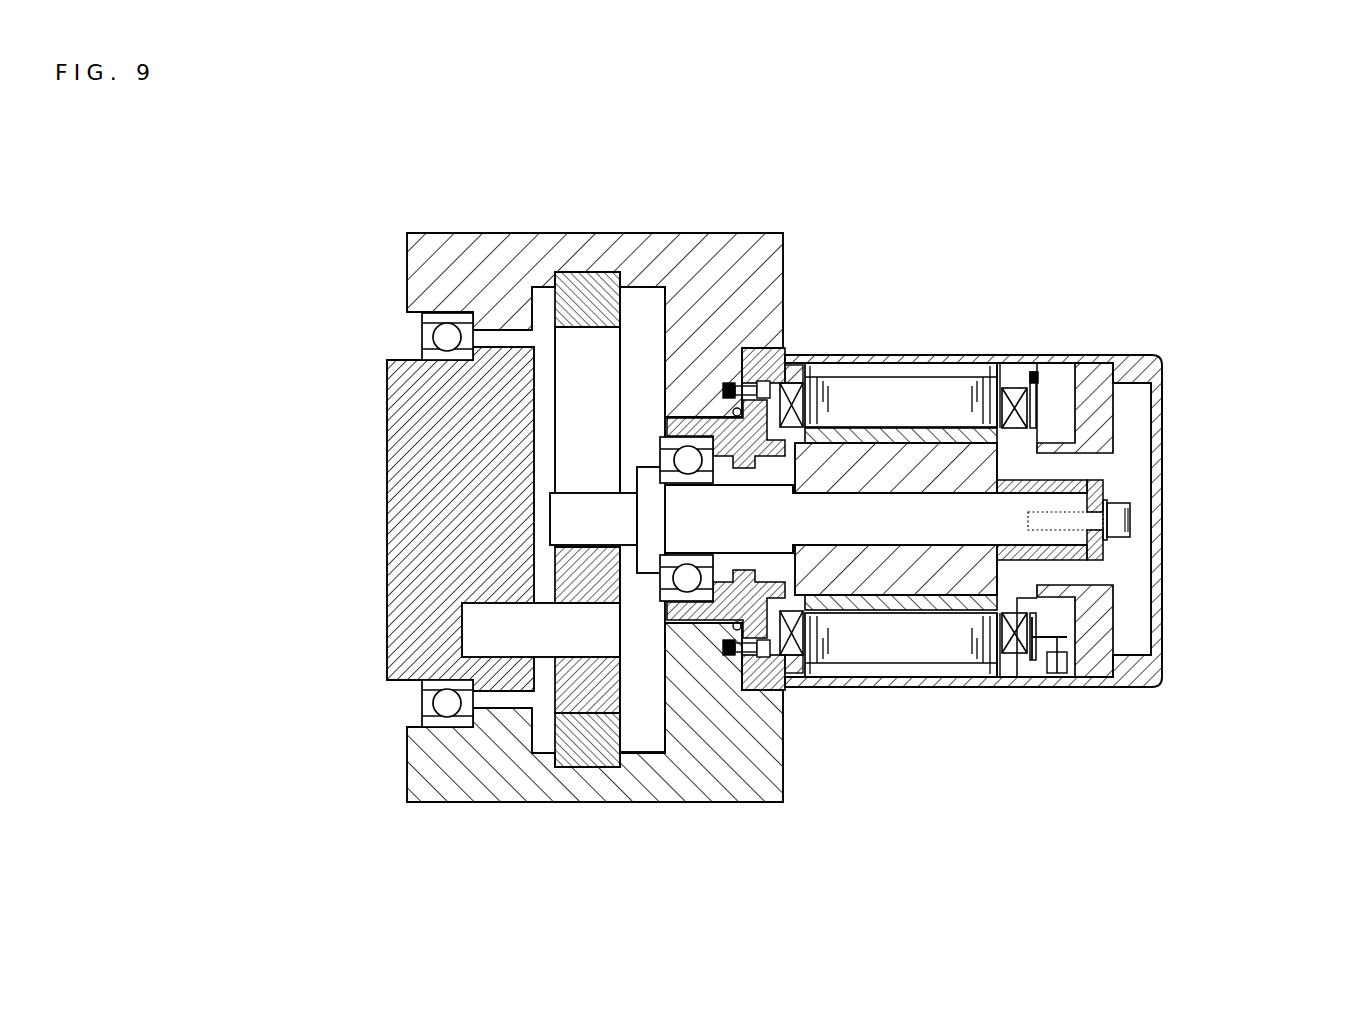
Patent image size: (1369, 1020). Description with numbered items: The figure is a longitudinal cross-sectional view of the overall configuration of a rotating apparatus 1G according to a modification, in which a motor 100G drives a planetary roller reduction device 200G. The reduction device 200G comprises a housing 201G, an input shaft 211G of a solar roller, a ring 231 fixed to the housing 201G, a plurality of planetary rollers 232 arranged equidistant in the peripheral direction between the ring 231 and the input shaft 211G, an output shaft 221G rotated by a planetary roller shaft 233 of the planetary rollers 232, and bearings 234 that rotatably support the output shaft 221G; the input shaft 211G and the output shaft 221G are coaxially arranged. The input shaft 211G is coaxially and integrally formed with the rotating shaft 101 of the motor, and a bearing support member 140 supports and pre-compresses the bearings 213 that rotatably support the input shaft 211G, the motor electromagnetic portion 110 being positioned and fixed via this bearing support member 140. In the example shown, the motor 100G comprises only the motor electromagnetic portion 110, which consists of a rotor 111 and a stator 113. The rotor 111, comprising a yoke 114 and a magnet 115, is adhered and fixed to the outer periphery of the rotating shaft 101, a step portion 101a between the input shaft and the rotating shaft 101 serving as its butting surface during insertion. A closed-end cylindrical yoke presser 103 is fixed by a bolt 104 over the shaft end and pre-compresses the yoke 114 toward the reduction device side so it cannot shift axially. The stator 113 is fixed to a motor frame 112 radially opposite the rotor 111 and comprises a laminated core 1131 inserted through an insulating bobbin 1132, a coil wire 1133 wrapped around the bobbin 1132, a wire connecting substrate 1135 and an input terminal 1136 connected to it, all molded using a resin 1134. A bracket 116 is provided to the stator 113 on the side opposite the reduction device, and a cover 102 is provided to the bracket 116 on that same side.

The rotating apparatus 1G is at (1268, 90).
The motor 100G is at (1240, 342).
The reduction device 200G is at (380, 190).
The housing 201G is at (633, 233).
The input shaft 211G is at (598, 525).
The output shaft 221G is at (425, 520).
The ring 231 is at (578, 753).
The planetary rollers 232 is at (600, 690).
The planetary roller shaft 233 is at (465, 628).
The bearings 234 is at (425, 336).
The bearings 213 is at (688, 602).
The bearing support member 140 is at (787, 693).
The motor electromagnetic portion 110 is at (1113, 802).
The rotor 111 is at (962, 730).
The motor frame 112 is at (1000, 687).
The stator 113 is at (1090, 183).
The laminated core 1131 is at (928, 397).
The bobbin 1132 is at (1011, 375).
The coil wire 1133 is at (1018, 386).
The resin 1134 is at (1055, 360).
The wire connecting substrate 1135 is at (1047, 655).
The input terminal 1136 is at (1065, 667).
The yoke 114 is at (923, 587).
The magnet 115 is at (850, 608).
The bracket 116 is at (1097, 392).
The rotating shaft 101 is at (1044, 502).
The step portion 101a is at (803, 555).
The cover 102 is at (1162, 668).
The yoke presser 103 is at (1103, 557).
The bolt 104 is at (1130, 520).